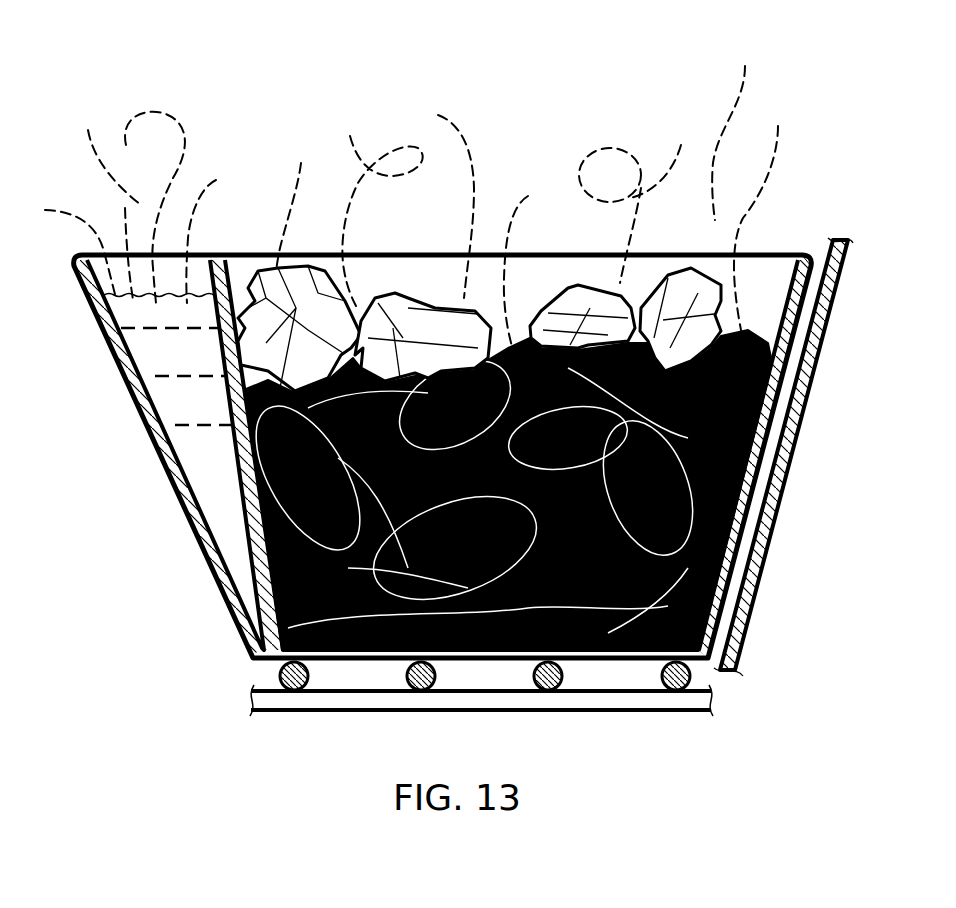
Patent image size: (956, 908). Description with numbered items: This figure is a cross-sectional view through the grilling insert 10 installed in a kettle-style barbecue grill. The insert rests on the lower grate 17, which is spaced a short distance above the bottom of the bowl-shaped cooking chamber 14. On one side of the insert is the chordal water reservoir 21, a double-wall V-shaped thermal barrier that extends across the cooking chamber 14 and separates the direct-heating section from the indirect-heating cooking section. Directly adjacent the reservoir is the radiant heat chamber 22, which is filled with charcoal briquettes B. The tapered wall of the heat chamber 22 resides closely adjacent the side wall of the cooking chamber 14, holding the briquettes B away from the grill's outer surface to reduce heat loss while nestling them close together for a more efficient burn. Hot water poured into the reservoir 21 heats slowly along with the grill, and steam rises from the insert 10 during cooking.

The grilling insert 10 is at (640, 137).
The cooking chamber 14 is at (740, 597).
The lower grate 17 is at (597, 703).
The water reservoir 21 is at (96, 268).
The radiant heat chamber 22 is at (787, 257).
The charcoal briquettes B is at (510, 340).